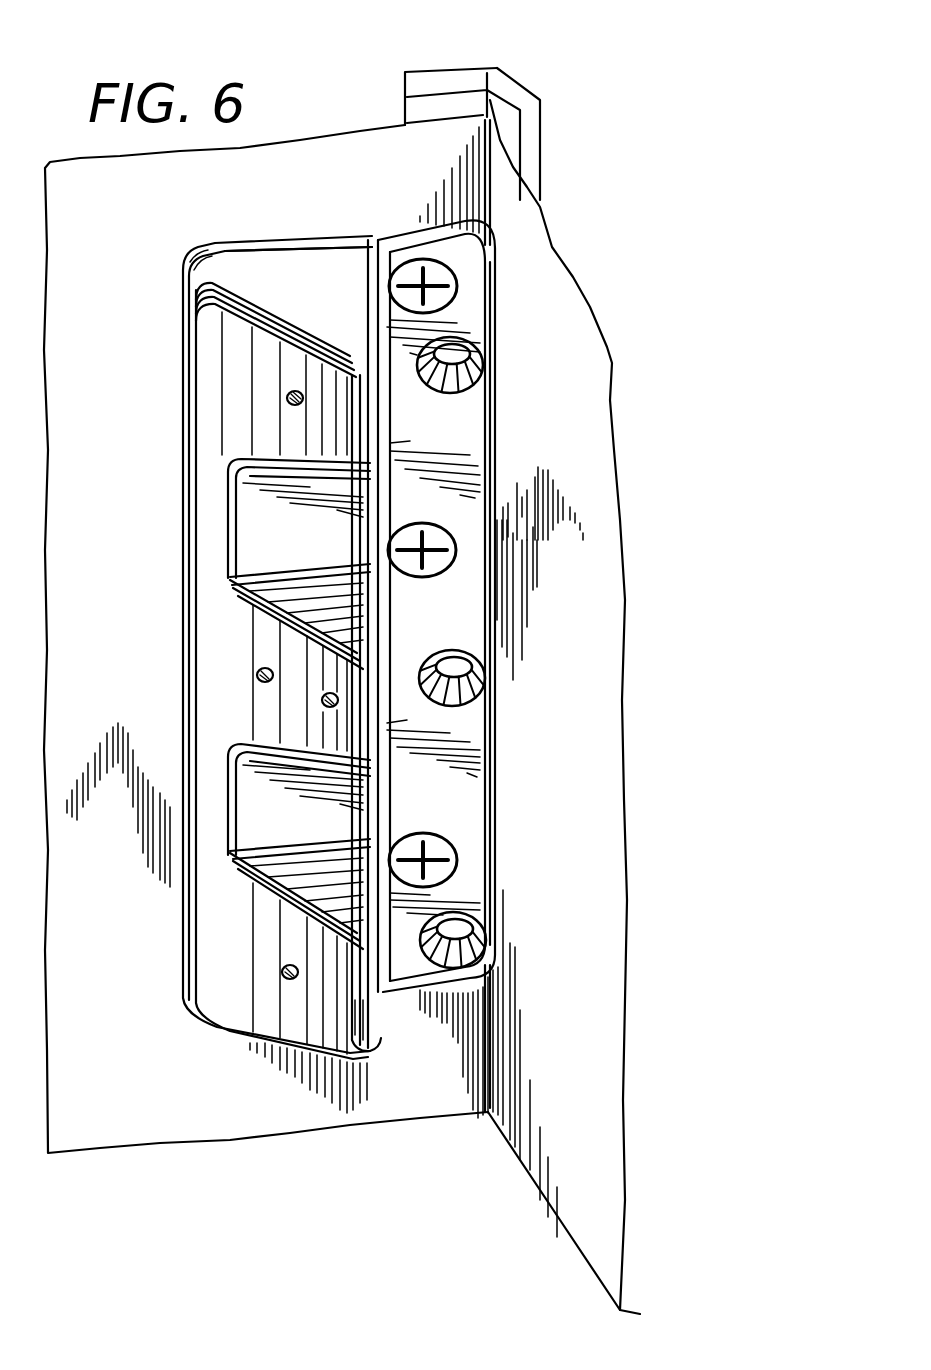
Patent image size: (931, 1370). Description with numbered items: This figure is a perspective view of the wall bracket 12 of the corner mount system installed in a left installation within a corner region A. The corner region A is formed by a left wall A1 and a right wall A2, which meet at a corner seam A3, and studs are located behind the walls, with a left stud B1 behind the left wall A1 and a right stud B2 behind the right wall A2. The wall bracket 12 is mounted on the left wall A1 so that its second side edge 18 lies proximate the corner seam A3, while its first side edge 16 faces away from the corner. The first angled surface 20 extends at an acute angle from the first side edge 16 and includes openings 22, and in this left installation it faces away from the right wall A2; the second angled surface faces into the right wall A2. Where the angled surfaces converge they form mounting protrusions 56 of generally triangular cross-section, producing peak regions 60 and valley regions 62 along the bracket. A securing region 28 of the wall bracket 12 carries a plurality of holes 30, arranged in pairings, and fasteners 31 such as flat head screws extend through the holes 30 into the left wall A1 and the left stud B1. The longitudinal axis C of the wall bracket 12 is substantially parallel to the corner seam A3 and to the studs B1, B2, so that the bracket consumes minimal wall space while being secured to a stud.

The wall bracket 12 is at (300, 252).
The first side edge 16 is at (182, 290).
The second side edge 18 is at (490, 318).
The first angled surface 20 is at (263, 707).
The opening 22 is at (296, 394).
The securing region 28 is at (467, 772).
The hole 30 is at (453, 352).
The fastener 31 is at (437, 537).
The mounting protrusion 56 is at (310, 310).
The peak region 60 is at (377, 1027).
The valley region 62 is at (258, 820).
The corner region A is at (442, 1149).
The left wall A1 is at (290, 1110).
The right wall A2 is at (568, 1212).
The corner seam A3 is at (490, 1113).
The left stud B1 is at (433, 78).
The right stud B2 is at (525, 93).
The longitudinal axis C is at (362, 220).